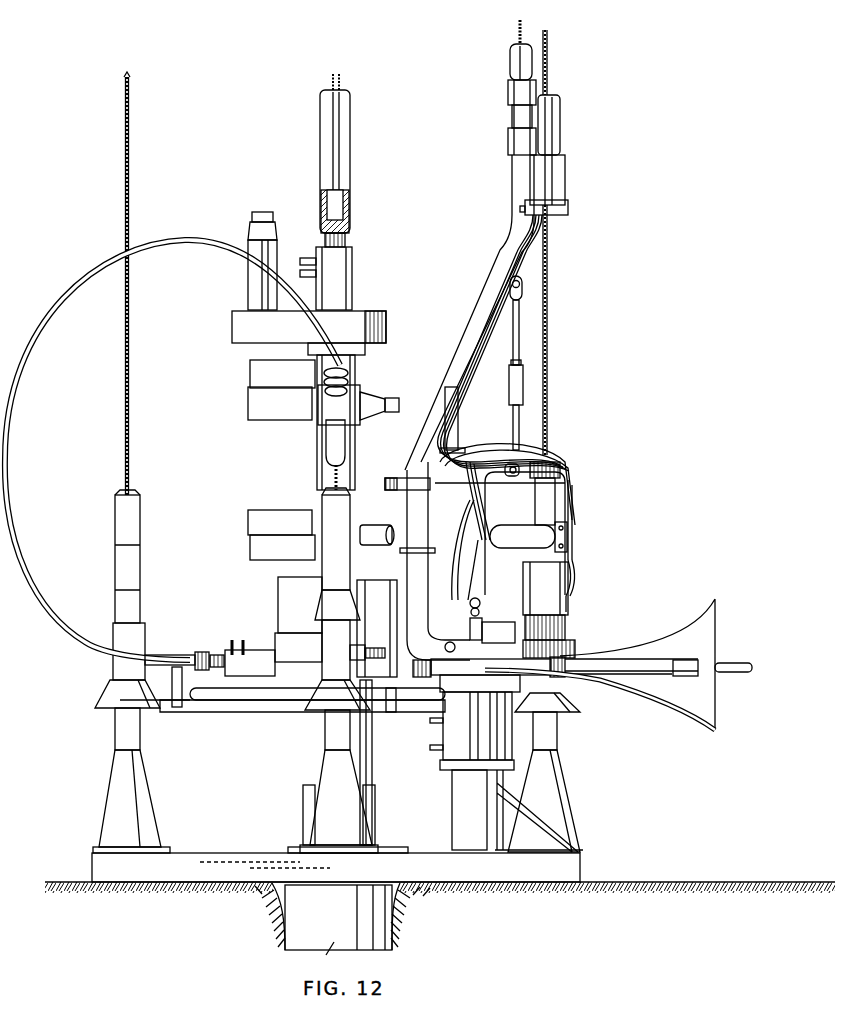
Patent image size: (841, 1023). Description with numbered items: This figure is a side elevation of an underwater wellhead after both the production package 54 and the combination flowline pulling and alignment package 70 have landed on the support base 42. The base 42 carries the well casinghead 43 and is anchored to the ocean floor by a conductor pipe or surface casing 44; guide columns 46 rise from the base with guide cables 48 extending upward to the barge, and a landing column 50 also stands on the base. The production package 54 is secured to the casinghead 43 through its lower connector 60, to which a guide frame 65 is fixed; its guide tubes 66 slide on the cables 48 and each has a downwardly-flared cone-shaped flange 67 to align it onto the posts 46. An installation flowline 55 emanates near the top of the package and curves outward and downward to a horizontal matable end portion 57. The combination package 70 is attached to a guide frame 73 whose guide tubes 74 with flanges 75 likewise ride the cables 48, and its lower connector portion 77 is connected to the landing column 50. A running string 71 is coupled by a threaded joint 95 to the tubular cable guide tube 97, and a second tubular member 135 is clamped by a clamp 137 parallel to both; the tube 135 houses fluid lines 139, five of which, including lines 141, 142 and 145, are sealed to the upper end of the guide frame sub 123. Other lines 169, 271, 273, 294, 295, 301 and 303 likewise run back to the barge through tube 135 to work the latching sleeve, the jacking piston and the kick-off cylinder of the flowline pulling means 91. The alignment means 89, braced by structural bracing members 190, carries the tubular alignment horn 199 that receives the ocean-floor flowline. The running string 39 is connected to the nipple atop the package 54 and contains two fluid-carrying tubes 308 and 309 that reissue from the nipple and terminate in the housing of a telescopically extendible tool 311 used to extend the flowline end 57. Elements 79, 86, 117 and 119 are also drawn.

The running string 39 is at (352, 118).
The support base 42 is at (232, 854).
The well casinghead 43 is at (373, 783).
The conductor pipe or surface casing 44 is at (347, 916).
The guide columns 46 is at (115, 512).
The guide cables 48 is at (125, 350).
The landing column 50 is at (484, 813).
The production package 54 is at (318, 455).
The flowline portion 55 is at (115, 262).
The matable end portion 57 is at (438, 630).
The connector 60 is at (282, 710).
The guide frame 65 is at (195, 705).
The guide tubes 66 is at (112, 660).
The cone-shaped flange 67 is at (113, 690).
The combination pulling and alignment package 70 is at (585, 591).
The running string 71 is at (510, 60).
The guide frame 73 is at (380, 532).
The guide tubes 74 is at (344, 578).
The cone-shaped flange 75 is at (350, 618).
The connector portion 77 is at (470, 733).
The cable 79 is at (517, 26).
The pin 86 is at (735, 666).
The alignment means 89 is at (634, 630).
The flowline pulling means 91 is at (405, 588).
The threaded joint 95 is at (508, 112).
The cable guide tube 97 is at (506, 225).
The turnbuckle 117 is at (523, 386).
The clevis 119 is at (520, 280).
The guide frame sub 123 is at (560, 510).
The second tubular member 135 is at (566, 176).
The clamp 137 is at (570, 213).
The fluid lines 139 is at (474, 452).
The fluid line 141 is at (436, 722).
The fluid line 142 is at (436, 749).
The fluid line 145 is at (573, 641).
The fluid line 169 is at (570, 556).
The structural bracing members 190 is at (570, 574).
The alignment horn 199 is at (692, 710).
The fluid line 271 is at (468, 509).
The fluid line 273 is at (476, 570).
The fluid line 294 is at (482, 667).
The fluid line 295 is at (542, 667).
The fluid line 301 is at (510, 622).
The fluid line 303 is at (530, 615).
The fluid-carrying tube 308 is at (332, 80).
The fluid-carrying tube 309 is at (342, 80).
The telescopically extendible tool 311 is at (250, 663).